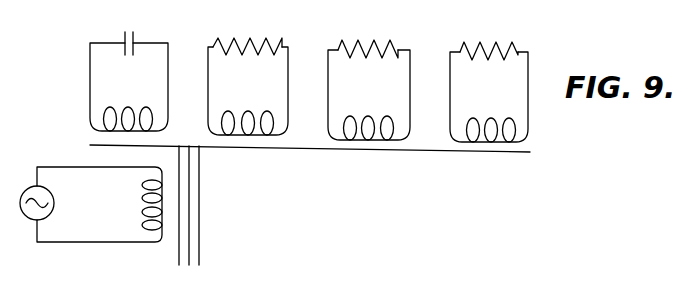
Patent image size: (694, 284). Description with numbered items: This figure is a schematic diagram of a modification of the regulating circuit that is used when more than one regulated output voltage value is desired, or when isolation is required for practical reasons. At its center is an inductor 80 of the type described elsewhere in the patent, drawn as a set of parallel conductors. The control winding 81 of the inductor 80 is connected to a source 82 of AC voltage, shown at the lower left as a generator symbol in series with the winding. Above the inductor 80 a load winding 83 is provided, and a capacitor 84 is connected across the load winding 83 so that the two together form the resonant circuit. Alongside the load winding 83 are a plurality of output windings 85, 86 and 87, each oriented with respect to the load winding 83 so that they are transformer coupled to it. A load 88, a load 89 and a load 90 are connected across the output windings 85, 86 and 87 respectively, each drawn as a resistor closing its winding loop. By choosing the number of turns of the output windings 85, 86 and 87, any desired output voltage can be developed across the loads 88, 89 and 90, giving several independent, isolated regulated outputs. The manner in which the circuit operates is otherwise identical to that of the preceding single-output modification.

The inductor 80 is at (207, 158).
The control winding 81 is at (147, 213).
The source of AC voltage 82 is at (32, 222).
The load winding 83 is at (130, 108).
The capacitor 84 is at (135, 38).
The output winding 85 is at (246, 108).
The output winding 86 is at (370, 116).
The output winding 87 is at (474, 114).
The load 88 is at (270, 38).
The load 89 is at (390, 43).
The load 90 is at (510, 48).